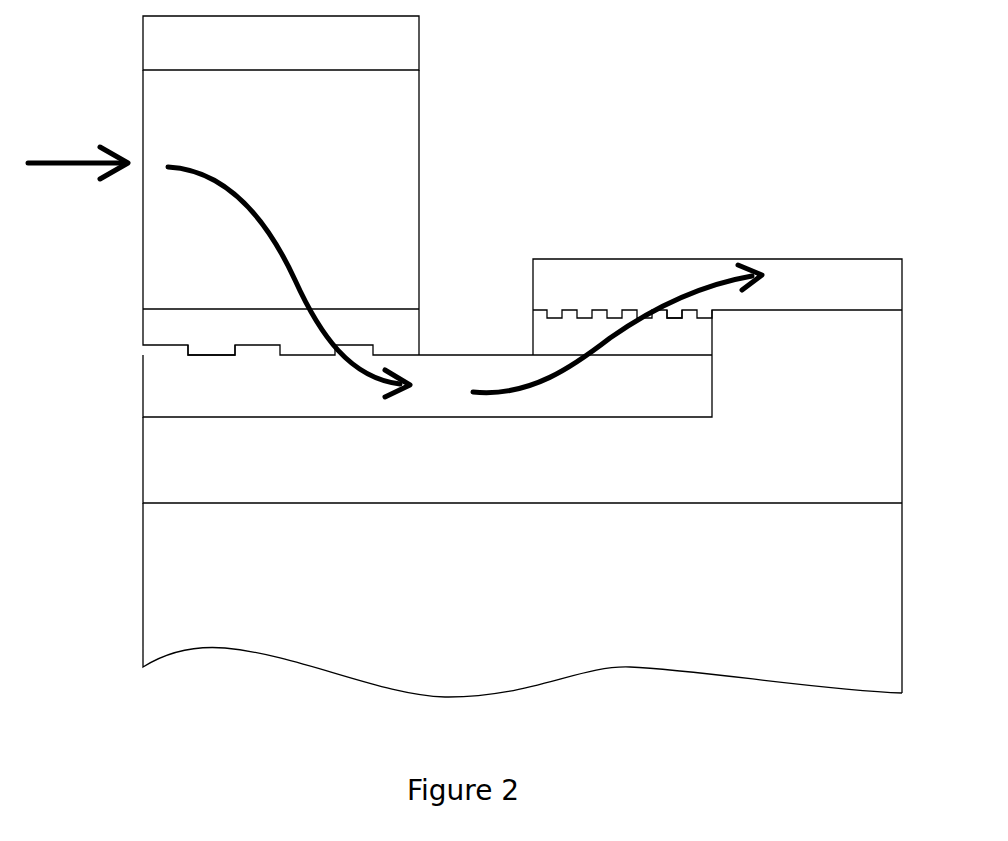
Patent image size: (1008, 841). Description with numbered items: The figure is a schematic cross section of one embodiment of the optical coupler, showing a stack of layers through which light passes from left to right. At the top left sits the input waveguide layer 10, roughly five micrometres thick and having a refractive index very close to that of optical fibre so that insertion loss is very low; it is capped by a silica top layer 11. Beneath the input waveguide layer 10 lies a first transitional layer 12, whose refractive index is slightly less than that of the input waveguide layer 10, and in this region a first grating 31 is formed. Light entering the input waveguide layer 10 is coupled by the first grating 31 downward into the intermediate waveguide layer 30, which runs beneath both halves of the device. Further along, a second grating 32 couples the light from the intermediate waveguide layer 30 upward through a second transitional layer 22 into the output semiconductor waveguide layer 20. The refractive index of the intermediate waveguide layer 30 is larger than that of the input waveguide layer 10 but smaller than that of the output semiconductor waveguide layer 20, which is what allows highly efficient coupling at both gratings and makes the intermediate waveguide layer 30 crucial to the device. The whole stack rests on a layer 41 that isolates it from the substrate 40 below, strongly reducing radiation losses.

The input waveguide layer 10 is at (281, 212).
The silica top layer 11 is at (281, 43).
The first transitional layer 12 is at (427, 332).
The output semiconductor waveguide layer 20 is at (717, 476).
The second transitional layer 22 is at (717, 330).
The intermediate waveguide layer 30 is at (427, 363).
The first grating 31 is at (231, 357).
The second grating 32 is at (686, 319).
The substrate 40 is at (522, 600).
The isolation layer 41 is at (522, 460).